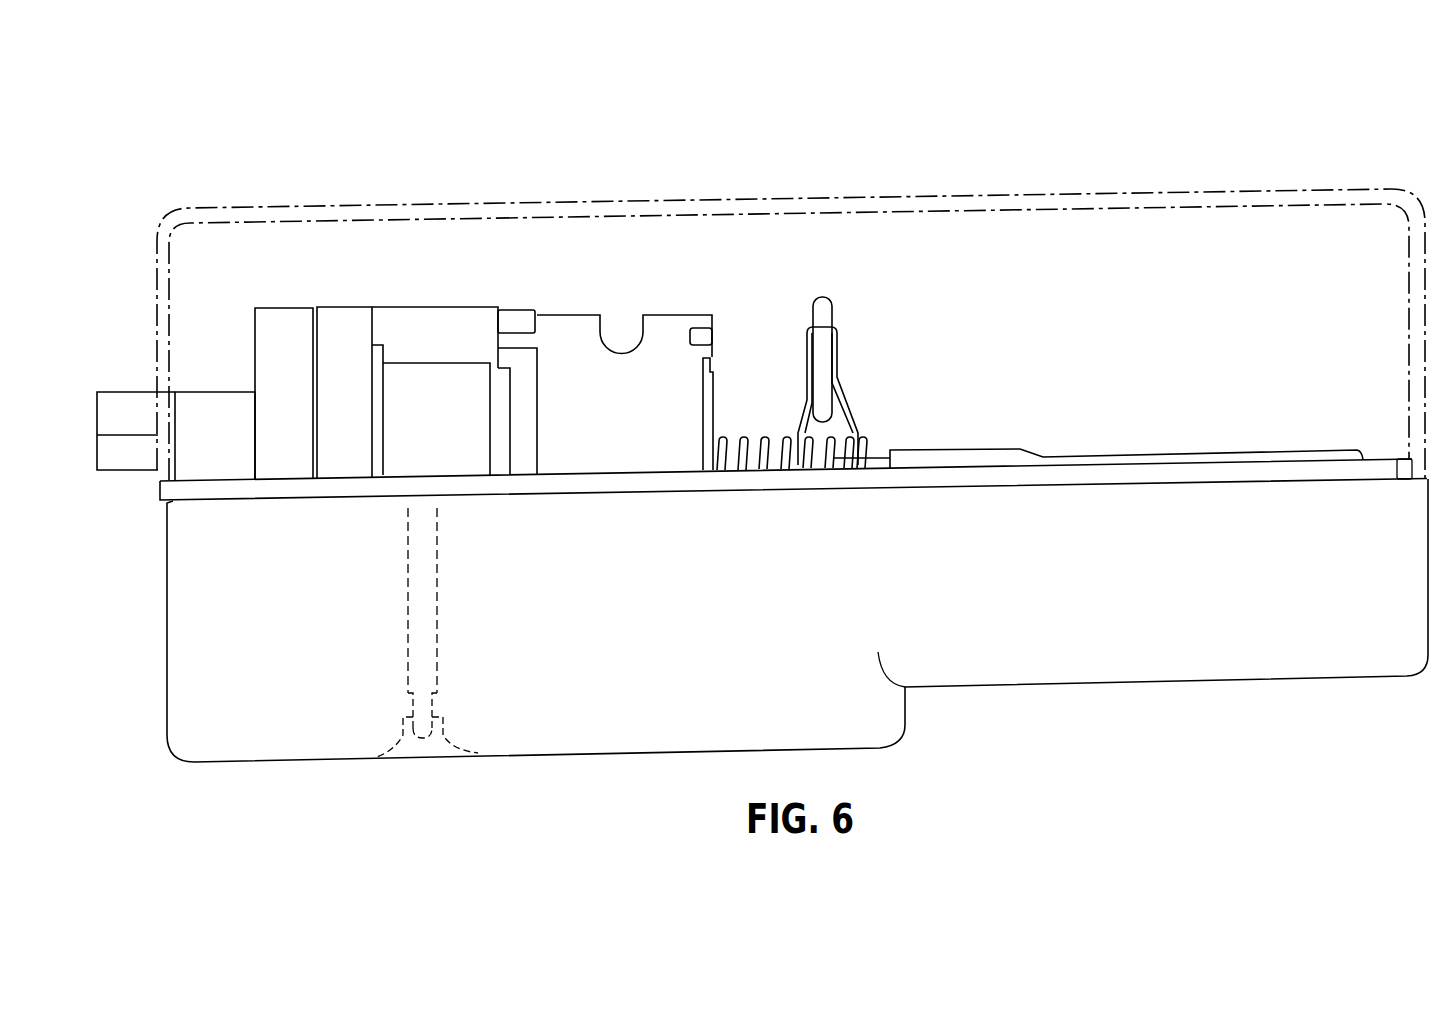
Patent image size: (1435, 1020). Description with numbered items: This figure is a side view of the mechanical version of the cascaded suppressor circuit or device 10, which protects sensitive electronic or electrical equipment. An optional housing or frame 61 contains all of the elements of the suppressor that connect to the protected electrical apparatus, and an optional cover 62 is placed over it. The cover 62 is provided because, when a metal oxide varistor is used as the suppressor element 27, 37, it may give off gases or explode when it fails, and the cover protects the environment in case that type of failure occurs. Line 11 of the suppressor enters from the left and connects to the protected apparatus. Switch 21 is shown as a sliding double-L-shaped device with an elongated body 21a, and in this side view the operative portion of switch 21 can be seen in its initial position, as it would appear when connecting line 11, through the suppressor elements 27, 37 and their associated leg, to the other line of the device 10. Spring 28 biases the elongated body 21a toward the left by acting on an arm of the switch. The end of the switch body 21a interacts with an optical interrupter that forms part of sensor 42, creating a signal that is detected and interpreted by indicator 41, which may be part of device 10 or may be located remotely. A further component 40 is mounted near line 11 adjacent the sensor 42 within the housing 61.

The cascaded suppressor circuit 10 is at (376, 103).
The line 11 is at (118, 400).
The switch 21 is at (672, 325).
The elongated body 21a is at (443, 317).
The suppressor element 27 is at (1198, 450).
The spring 28 is at (763, 437).
The suppressor element 37 is at (830, 302).
The component block 40 is at (220, 397).
The indicator 41 is at (432, 762).
The sensor 42 is at (298, 290).
The housing 61 is at (1335, 672).
The cover 62 is at (1318, 188).